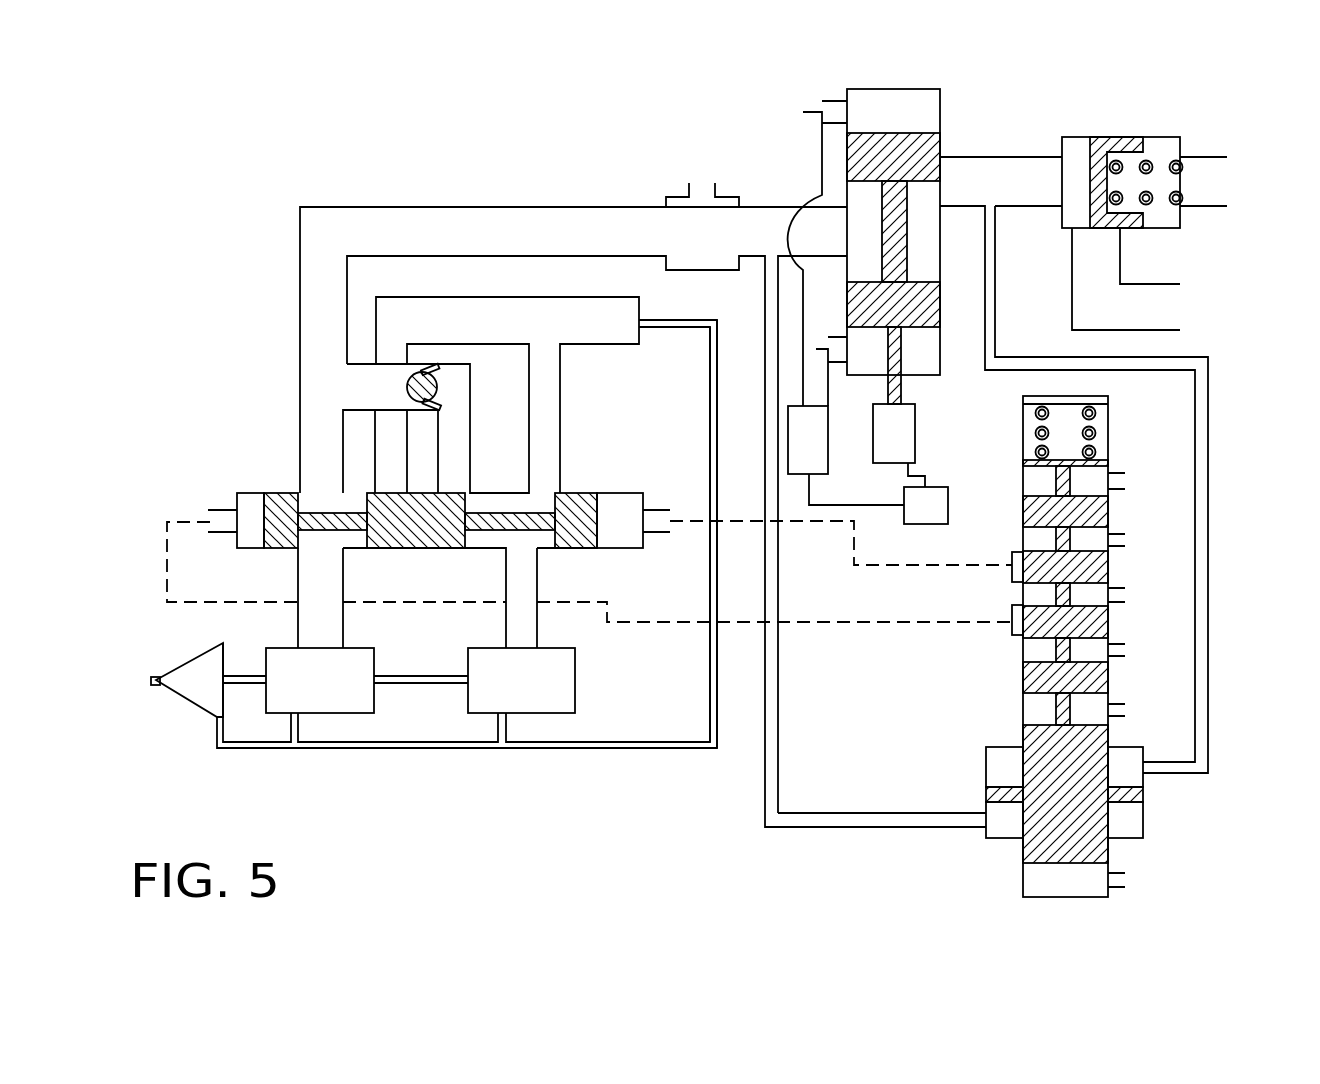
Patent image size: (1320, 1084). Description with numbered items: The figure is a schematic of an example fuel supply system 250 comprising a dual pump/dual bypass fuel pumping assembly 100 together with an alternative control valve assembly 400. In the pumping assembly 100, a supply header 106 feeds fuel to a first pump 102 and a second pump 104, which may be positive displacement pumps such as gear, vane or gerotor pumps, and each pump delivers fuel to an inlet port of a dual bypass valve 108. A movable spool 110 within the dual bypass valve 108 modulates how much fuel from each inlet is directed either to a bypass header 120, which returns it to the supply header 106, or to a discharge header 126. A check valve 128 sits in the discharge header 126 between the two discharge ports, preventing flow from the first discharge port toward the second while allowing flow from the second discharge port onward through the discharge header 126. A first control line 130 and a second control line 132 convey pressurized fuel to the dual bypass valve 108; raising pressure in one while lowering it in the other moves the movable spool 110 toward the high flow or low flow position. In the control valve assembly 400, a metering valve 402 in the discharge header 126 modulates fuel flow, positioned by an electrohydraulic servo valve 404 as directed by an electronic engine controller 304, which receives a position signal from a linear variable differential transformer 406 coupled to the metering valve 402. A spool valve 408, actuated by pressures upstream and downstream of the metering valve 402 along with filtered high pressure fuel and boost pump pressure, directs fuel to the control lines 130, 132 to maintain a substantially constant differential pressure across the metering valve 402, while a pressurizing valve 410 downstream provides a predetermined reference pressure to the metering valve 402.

The fuel supply system 250 is at (303, 132).
The dual pump/dual bypass fuel pumping assembly 100 is at (280, 354).
The discharge header 126 is at (322, 297).
The bypass header 120 is at (481, 315).
The check valve 128 is at (437, 388).
The dual bypass valve 108 is at (600, 466).
The first control line 130 is at (233, 510).
The second control line 132 is at (637, 494).
The movable spool 110 is at (587, 542).
The first pump 102 is at (364, 703).
The second pump 104 is at (567, 698).
The supply header 106 is at (295, 752).
The control valve assembly 400 is at (734, 820).
The metering valve 402 is at (966, 116).
The electrohydraulic servo valve 404 is at (813, 455).
The linear variable differential transformer 406 is at (903, 428).
The electronic engine controller 304 is at (935, 497).
The pressurizing valve 410 is at (1178, 124).
The spool valve 408 is at (998, 686).